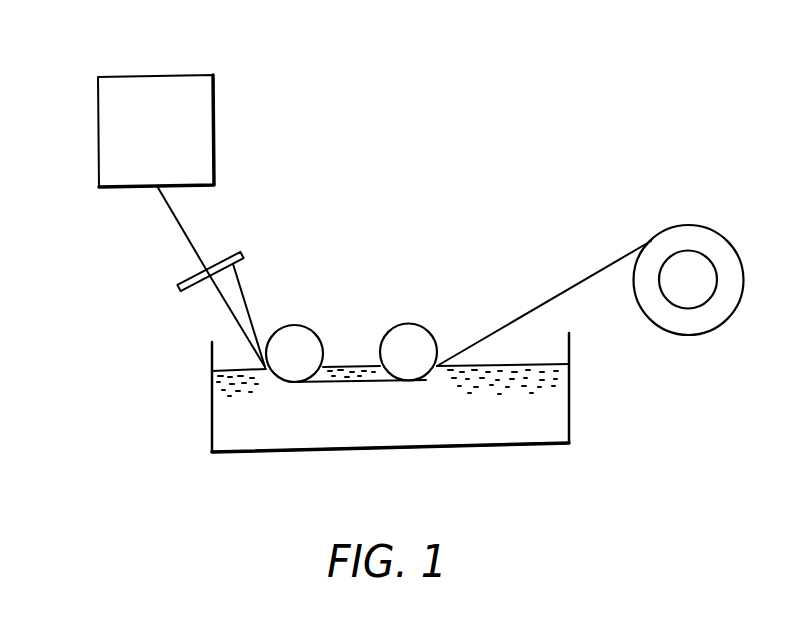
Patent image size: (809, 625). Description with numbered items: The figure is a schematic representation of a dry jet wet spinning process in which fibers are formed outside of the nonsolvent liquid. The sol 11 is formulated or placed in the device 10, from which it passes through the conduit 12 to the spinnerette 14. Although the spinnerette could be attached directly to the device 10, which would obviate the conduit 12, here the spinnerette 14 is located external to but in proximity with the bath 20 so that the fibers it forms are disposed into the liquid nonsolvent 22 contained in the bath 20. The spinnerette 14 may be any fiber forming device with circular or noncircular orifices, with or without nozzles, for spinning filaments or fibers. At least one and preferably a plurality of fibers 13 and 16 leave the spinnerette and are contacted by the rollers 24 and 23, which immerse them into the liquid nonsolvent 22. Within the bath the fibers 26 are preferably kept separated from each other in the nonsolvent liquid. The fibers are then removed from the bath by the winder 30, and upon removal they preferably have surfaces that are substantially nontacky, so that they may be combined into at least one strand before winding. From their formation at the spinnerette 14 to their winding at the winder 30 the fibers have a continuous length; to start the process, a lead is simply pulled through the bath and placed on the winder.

The device 10 is at (214, 100).
The sol 11 is at (156, 137).
The conduit 12 is at (182, 232).
The fiber 13 is at (216, 300).
The spinnerette 14 is at (241, 254).
The fiber 16 is at (239, 285).
The bath 20 is at (211, 398).
The liquid nonsolvent 22 is at (318, 440).
The roller 23 is at (407, 323).
The roller 24 is at (303, 326).
The fibers 26 is at (368, 383).
The winder 30 is at (743, 256).